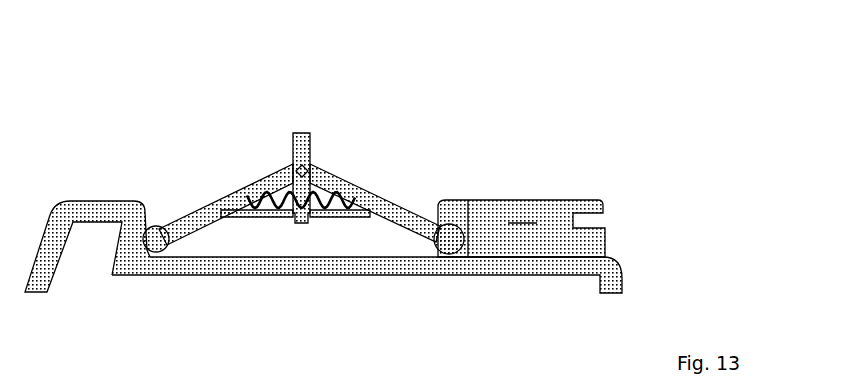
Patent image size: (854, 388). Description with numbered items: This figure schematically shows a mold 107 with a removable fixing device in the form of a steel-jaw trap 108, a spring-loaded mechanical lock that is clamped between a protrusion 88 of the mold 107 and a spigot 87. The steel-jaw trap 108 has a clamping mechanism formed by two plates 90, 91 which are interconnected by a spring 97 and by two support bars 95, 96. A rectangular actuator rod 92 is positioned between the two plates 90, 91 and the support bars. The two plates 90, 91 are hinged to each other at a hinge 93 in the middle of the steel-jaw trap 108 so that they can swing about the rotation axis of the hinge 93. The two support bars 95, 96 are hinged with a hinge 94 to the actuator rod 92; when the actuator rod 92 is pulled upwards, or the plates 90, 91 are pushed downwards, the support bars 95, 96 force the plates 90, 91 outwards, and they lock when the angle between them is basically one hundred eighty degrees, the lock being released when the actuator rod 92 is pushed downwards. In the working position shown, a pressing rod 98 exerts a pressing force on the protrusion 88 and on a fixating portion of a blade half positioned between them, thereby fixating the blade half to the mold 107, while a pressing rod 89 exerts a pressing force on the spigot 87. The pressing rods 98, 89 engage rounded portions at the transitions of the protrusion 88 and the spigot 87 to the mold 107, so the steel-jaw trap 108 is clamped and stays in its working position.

The spigot 87 is at (565, 200).
The protrusion 88 is at (93, 201).
The pressing rod 89 is at (447, 254).
The plate 90 is at (215, 203).
The plate 91 is at (381, 201).
The actuator rod 92 is at (303, 133).
The hinge 93 is at (306, 168).
The hinge 94 is at (301, 223).
The support bar 95 is at (227, 217).
The support bar 96 is at (366, 217).
The spring 97 is at (272, 193).
The pressing rod 98 is at (152, 252).
The mold 107 is at (623, 279).
The steel-jaw trap 108 is at (430, 82).